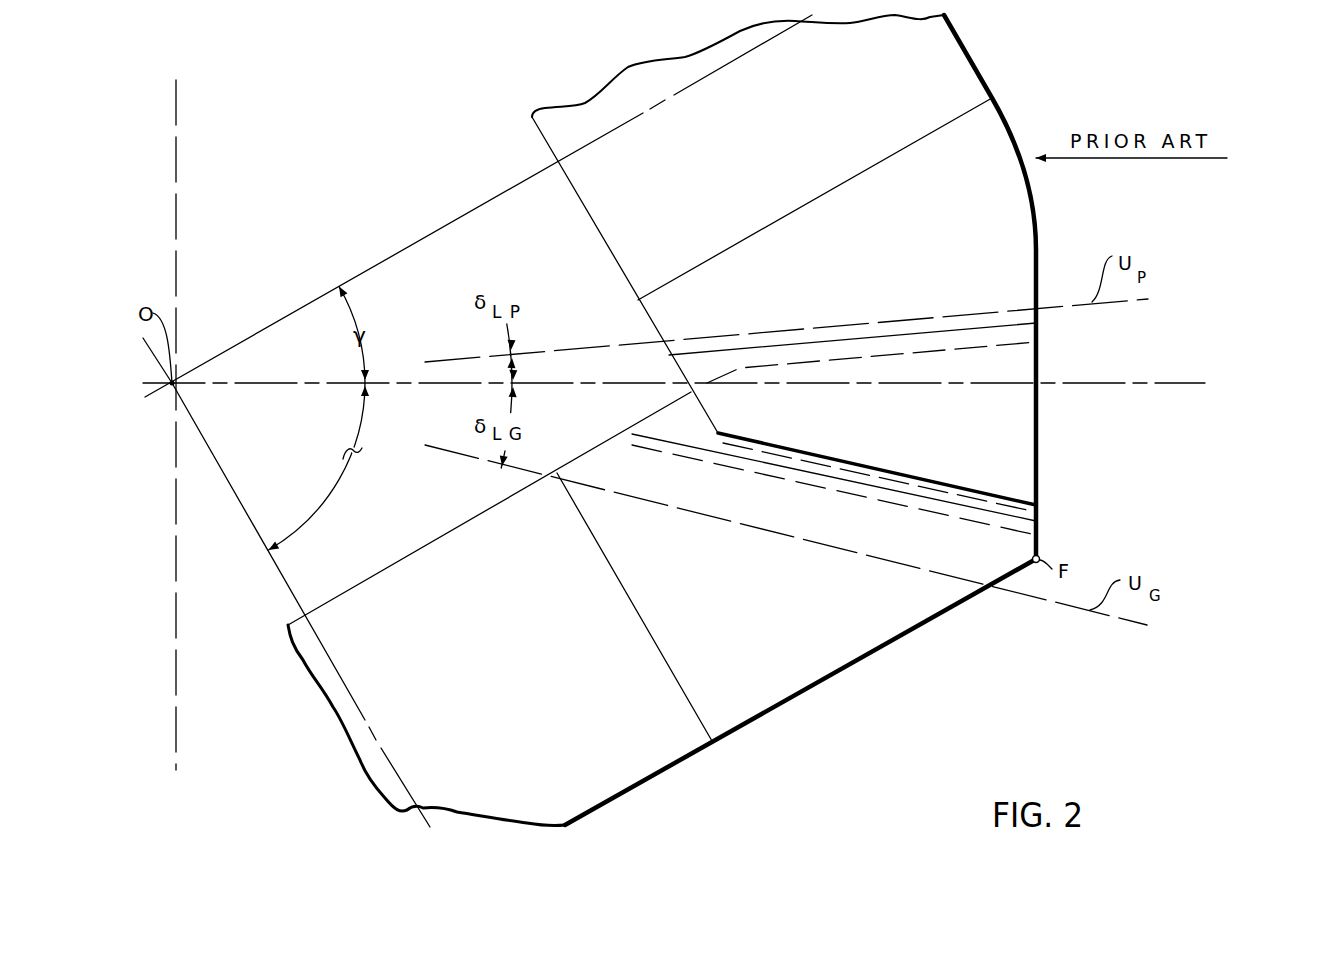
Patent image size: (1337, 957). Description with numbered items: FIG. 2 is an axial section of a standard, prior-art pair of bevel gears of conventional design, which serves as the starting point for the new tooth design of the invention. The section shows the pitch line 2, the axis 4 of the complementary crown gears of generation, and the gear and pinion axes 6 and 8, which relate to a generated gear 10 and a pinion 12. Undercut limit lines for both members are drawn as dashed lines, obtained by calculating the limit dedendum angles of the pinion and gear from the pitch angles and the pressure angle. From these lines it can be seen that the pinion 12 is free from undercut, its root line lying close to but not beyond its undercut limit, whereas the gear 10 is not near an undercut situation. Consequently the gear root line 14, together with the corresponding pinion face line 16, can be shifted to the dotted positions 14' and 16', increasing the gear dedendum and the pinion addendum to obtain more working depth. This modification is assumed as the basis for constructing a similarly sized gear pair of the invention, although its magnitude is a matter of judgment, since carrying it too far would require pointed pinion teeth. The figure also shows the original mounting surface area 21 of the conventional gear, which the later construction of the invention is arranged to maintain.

The pitch line 2 is at (1067, 383).
The axis of the complementary crown gears of generation 4 is at (175, 713).
The gear axis 6 is at (283, 580).
The pinion axis 8 is at (463, 215).
The generated gear 10 is at (624, 759).
The pinion 12 is at (567, 118).
The gear root line 14 is at (834, 469).
The modified gear root line 14' is at (834, 490).
The pinion face line 16 is at (877, 453).
The modified pinion face line 16' is at (879, 475).
The mounting surface area 21 is at (898, 640).